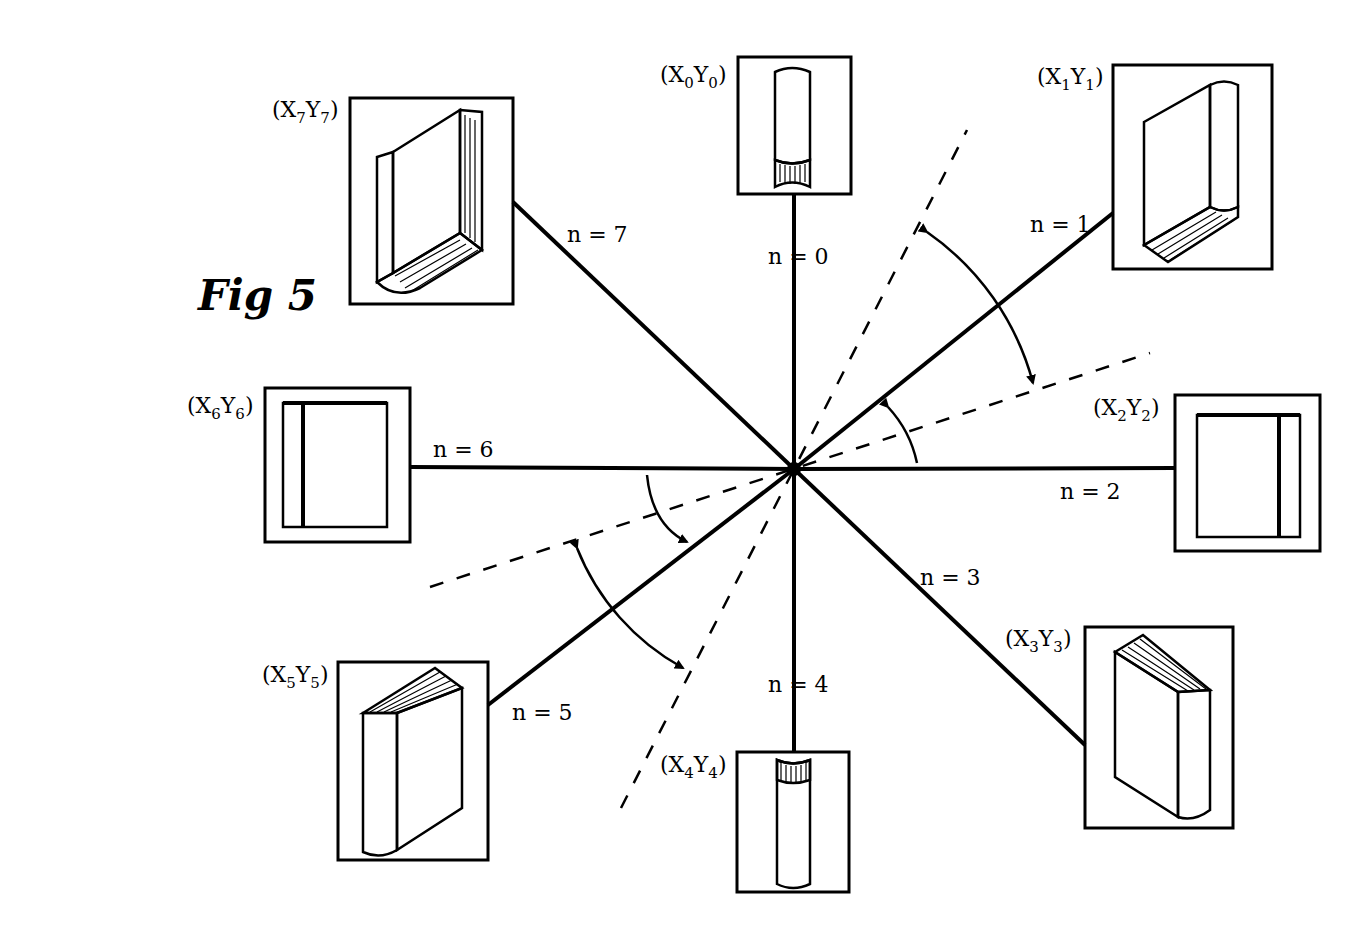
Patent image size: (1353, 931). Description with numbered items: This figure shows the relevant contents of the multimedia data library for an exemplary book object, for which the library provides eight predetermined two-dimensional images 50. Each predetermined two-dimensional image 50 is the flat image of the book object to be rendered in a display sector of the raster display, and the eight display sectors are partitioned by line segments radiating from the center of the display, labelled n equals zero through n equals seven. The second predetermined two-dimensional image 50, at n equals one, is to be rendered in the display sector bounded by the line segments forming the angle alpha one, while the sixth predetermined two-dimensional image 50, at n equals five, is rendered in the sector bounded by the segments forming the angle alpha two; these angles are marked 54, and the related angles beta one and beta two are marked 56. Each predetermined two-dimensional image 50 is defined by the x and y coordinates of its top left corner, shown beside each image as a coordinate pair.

The predetermined 2-D image 50 is at (1272, 160).
The angle alpha between dashed reference line and book orientation 54 is at (1027, 318).
The angle beta between dashed reference line and book orientation 56 is at (905, 412).